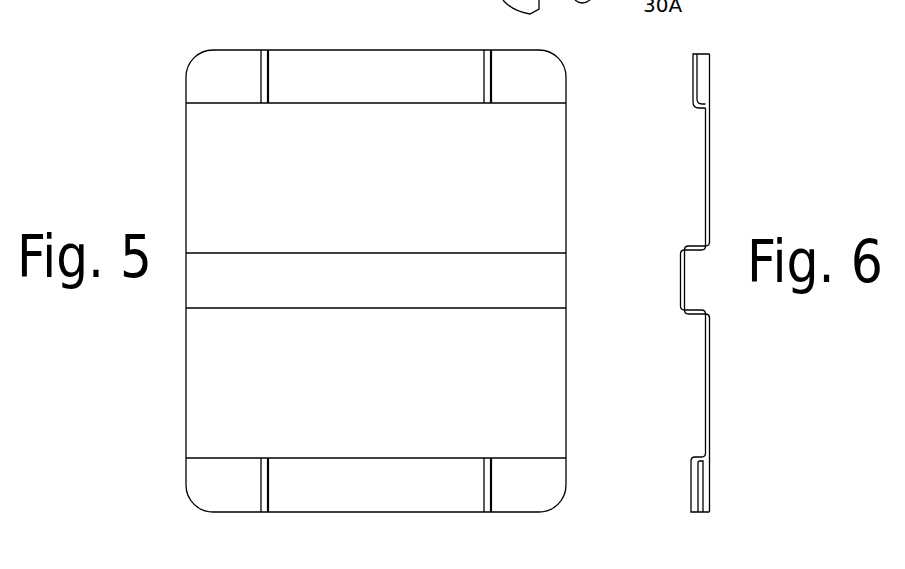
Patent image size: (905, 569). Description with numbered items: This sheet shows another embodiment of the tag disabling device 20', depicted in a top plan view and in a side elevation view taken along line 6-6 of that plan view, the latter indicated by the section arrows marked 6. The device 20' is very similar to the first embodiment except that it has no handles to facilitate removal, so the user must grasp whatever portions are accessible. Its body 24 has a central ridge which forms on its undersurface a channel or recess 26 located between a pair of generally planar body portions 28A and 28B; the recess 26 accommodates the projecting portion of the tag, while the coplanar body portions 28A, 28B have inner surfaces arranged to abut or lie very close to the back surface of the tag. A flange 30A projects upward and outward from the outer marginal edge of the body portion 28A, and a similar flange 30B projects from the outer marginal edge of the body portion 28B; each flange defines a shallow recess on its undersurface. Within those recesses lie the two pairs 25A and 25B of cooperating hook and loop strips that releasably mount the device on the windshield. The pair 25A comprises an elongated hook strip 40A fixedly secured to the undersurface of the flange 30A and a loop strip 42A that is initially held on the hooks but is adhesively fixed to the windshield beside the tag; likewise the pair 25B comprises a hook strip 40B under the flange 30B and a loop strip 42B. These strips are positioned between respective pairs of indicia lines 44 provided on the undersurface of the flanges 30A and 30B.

In FIG. 5, the tag disabling device 20' is at (97, 392).
In FIG. 5, the body 24 is at (205, 226).
In FIG. 6, the body 24 is at (695, 283).
In FIG. 5, the pair of cooperating hook and loop strips 25A is at (347, 73).
In FIG. 6, the pair of cooperating hook and loop strips 25A is at (717, 62).
In FIG. 5, the pair of cooperating hook and loop strips 25B is at (310, 490).
In FIG. 6, the pair of cooperating hook and loop strips 25B is at (717, 509).
In FIG. 5, the recess 26 is at (220, 285).
In FIG. 6, the recess 26 is at (682, 305).
In FIG. 5, the planar body portion 28A is at (205, 170).
In FIG. 6, the planar body portion 28A is at (705, 168).
In FIG. 5, the planar body portion 28B is at (218, 382).
In FIG. 6, the planar body portion 28B is at (706, 390).
In FIG. 5, the flange 30A is at (553, 82).
In FIG. 6, the flange 30A is at (702, 102).
In FIG. 5, the flange 30B is at (528, 488).
In FIG. 6, the flange 30B is at (690, 477).
In FIG. 6, the hook strip 40A is at (700, 97).
In FIG. 6, the hook strip 40B is at (706, 89).
In FIG. 6, the loop strip 42A is at (697, 493).
In FIG. 6, the loop strip 42B is at (703, 472).
In FIG. 5, the indicia lines 44 is at (262, 82).
In FIG. 5, the section line 6- 6 is at (166, 108).